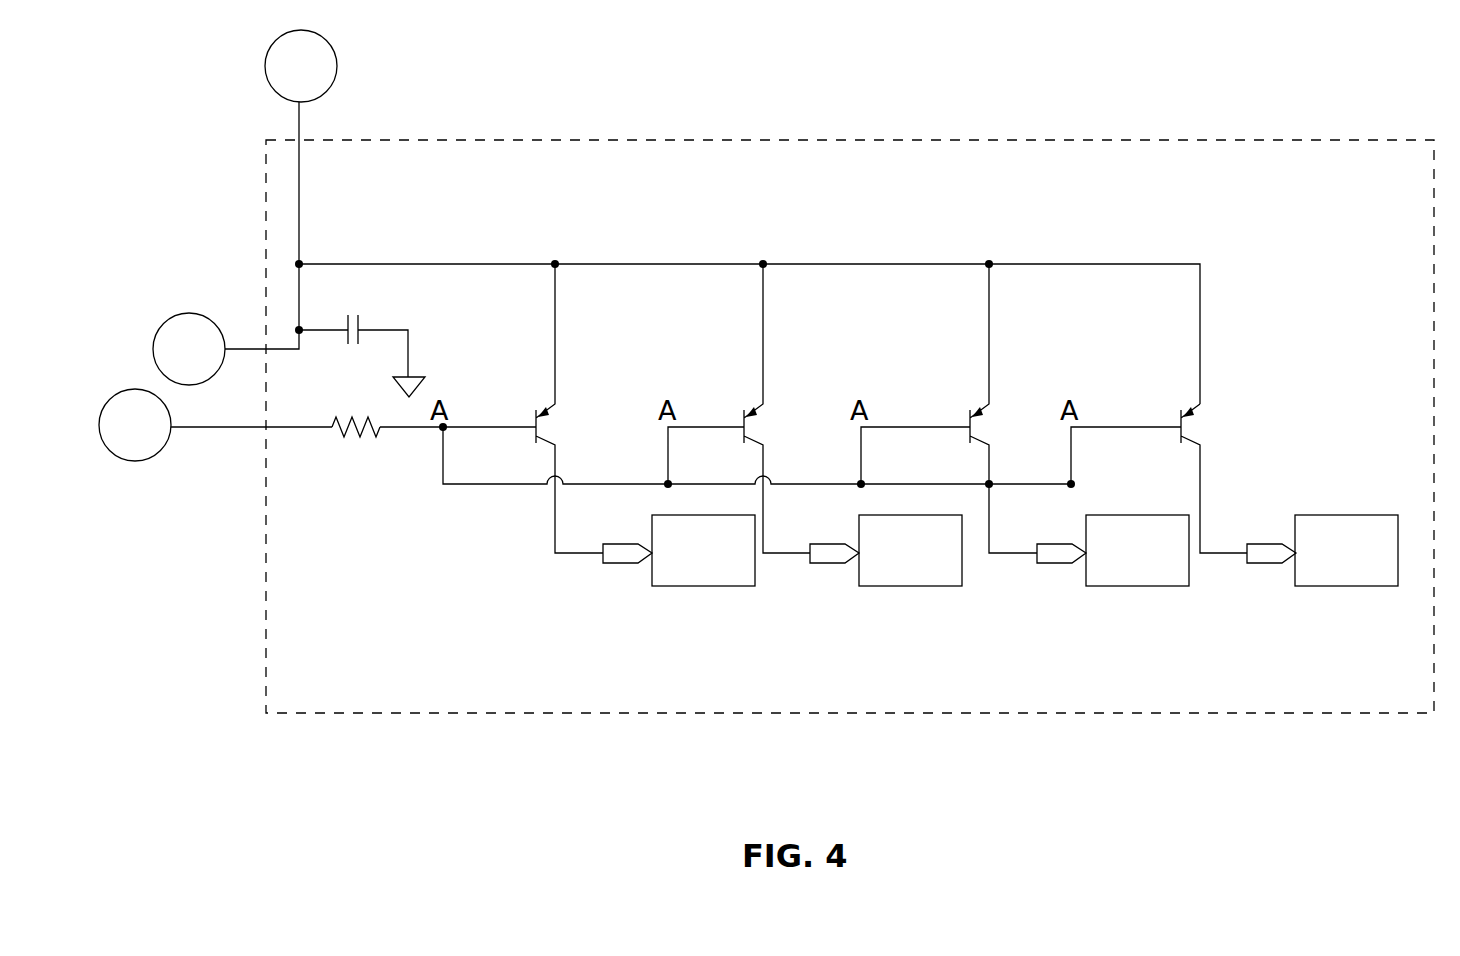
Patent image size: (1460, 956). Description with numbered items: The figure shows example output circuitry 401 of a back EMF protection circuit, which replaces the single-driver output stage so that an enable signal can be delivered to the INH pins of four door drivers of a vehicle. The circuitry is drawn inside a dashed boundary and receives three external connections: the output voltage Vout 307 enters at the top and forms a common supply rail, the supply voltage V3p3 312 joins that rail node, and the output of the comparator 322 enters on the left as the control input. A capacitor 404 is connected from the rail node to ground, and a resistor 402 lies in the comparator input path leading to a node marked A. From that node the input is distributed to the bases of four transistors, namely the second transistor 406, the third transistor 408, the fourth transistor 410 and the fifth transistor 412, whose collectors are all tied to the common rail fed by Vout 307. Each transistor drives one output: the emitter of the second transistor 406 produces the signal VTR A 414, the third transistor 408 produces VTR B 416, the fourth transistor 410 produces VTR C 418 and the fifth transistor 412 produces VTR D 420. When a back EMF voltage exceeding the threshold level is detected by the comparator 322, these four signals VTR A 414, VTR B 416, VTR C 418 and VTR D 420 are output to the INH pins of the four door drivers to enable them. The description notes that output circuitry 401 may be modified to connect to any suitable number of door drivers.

The Vout 307 is at (277, 80).
The V3p3 312 is at (165, 363).
The comparator 322 is at (111, 439).
The output circuitry 401 is at (1378, 140).
The resistor R7 402 is at (381, 502).
The capacitor C1 404 is at (446, 307).
The transistor T2 406 is at (618, 452).
The transistor T3 408 is at (828, 452).
The transistor T4 410 is at (1053, 452).
The transistor T5 412 is at (1263, 452).
The VTR A signal 414 is at (679, 577).
The VTR B signal 416 is at (886, 577).
The VTR C signal 418 is at (1113, 577).
The VTR D signal 420 is at (1322, 577).